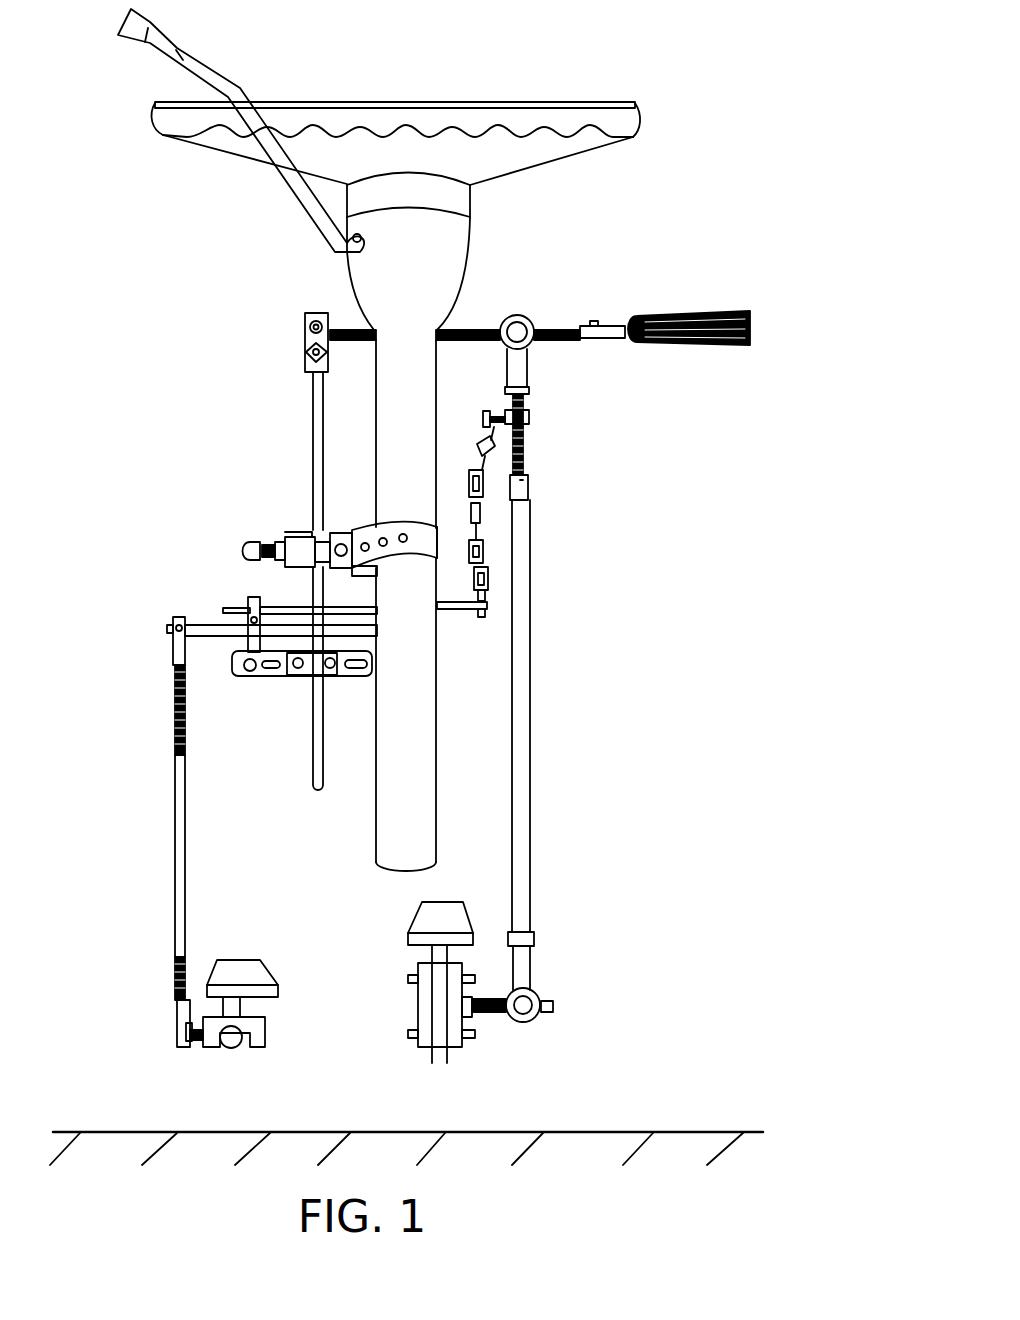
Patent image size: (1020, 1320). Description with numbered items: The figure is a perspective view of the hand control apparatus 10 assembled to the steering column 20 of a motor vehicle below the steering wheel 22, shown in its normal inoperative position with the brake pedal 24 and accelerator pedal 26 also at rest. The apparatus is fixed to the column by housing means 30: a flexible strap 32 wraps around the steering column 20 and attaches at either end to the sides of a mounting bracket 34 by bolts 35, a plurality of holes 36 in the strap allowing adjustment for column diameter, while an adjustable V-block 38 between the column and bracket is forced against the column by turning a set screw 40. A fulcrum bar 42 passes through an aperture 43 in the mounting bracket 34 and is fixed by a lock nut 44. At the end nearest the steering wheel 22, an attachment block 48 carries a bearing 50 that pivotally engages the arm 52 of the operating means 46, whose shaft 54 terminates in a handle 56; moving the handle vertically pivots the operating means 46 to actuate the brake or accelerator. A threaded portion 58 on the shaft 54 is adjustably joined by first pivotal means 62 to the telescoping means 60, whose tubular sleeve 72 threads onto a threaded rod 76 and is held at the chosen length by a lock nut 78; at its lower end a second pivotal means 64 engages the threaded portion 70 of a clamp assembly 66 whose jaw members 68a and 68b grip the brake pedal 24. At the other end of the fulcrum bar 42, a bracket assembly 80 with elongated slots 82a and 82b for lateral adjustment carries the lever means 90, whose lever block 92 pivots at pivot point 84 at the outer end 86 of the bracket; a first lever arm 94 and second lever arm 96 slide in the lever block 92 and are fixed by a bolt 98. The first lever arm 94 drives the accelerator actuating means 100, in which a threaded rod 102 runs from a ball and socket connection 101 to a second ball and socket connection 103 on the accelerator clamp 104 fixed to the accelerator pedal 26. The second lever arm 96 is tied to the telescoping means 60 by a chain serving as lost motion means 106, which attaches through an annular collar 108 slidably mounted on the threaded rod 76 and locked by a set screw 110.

The hand control apparatus 10 is at (597, 427).
The steering column 20 is at (436, 753).
The steering wheel 22 is at (636, 114).
The brake pedal 24 is at (410, 936).
The accelerator pedal 26 is at (240, 960).
The housing means 30 is at (220, 494).
The flexible strap 32 is at (434, 540).
The mounting bracket 34 is at (296, 561).
The bolts 35 is at (338, 545).
The holes 36 is at (366, 541).
The adjustable V-block 38 is at (370, 576).
The set screw 40 is at (243, 552).
The fulcrum bar 42 is at (313, 402).
The aperture 43 is at (322, 541).
The lock nut 44 is at (285, 541).
The operating means 46 is at (620, 304).
The attachment block 48 is at (305, 346).
The bearing 50 is at (347, 314).
The arm 52 is at (310, 325).
The shaft 54 is at (440, 340).
The handle 56 is at (716, 320).
The threaded portion 58 is at (470, 328).
The telescoping means 60 is at (530, 568).
The first pivotal means 62 is at (517, 364).
The second pivotal means 64 is at (530, 972).
The clamp assembly 66 is at (495, 1048).
The jaw member 68a is at (420, 1048).
The jaw member 68b is at (445, 1048).
The threaded portion 70 is at (506, 1012).
The tubular sleeve 72 is at (523, 915).
The threaded rod 76 is at (527, 446).
The lock nut 78 is at (528, 478).
The bracket assembly 80 is at (282, 677).
The elongated slot 82a is at (272, 677).
The elongated slot 82b is at (362, 677).
The pivot point 84 is at (250, 674).
The outer end 86 is at (237, 661).
The lever means 90 is at (190, 583).
The lever block 92 is at (252, 597).
The first lever arm 94 is at (179, 624).
The second lever arm 96 is at (447, 612).
The bolt 98 is at (248, 622).
The accelerator actuating means 100 is at (167, 1010).
The ball and socket connection 101 is at (173, 650).
The threaded rod 102 is at (175, 855).
The ball and socket connection 103 is at (188, 1040).
The accelerator clamp 104 is at (258, 1047).
The lost motion means 106 is at (470, 481).
The annular collar 108 is at (529, 414).
The set screw 110 is at (487, 416).